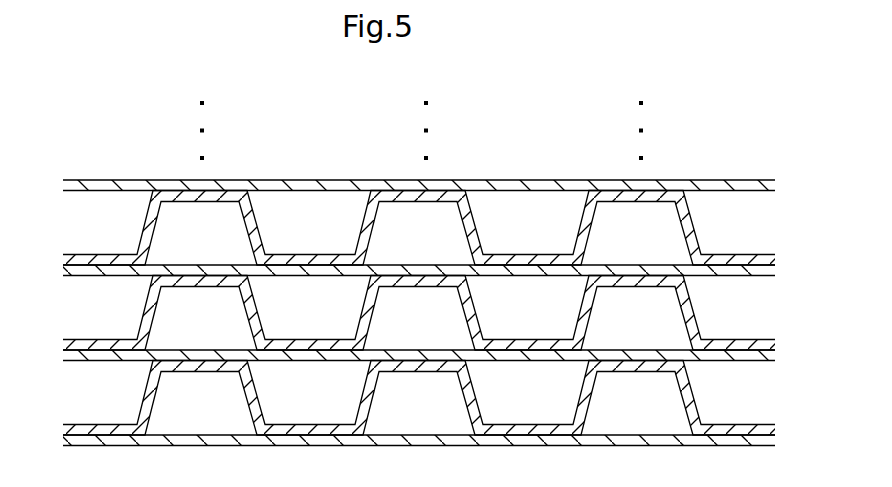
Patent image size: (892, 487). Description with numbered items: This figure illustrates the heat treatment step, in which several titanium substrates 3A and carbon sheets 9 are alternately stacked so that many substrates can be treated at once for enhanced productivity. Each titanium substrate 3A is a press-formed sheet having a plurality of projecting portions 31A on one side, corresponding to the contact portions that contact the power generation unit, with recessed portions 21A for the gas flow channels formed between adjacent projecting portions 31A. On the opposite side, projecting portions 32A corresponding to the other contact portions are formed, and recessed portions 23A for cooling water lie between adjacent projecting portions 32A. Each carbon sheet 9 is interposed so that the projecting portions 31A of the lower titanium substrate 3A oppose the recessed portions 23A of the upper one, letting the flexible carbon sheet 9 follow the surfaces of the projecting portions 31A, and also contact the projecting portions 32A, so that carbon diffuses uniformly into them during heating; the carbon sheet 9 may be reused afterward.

The carbon sheet 9 is at (63, 187).
The titanium substrate 3A is at (758, 253).
The recessed portions 21A is at (105, 222).
The recessed portions 23A is at (199, 259).
The projecting portions 31A is at (201, 192).
The projecting portions 32A is at (318, 257).